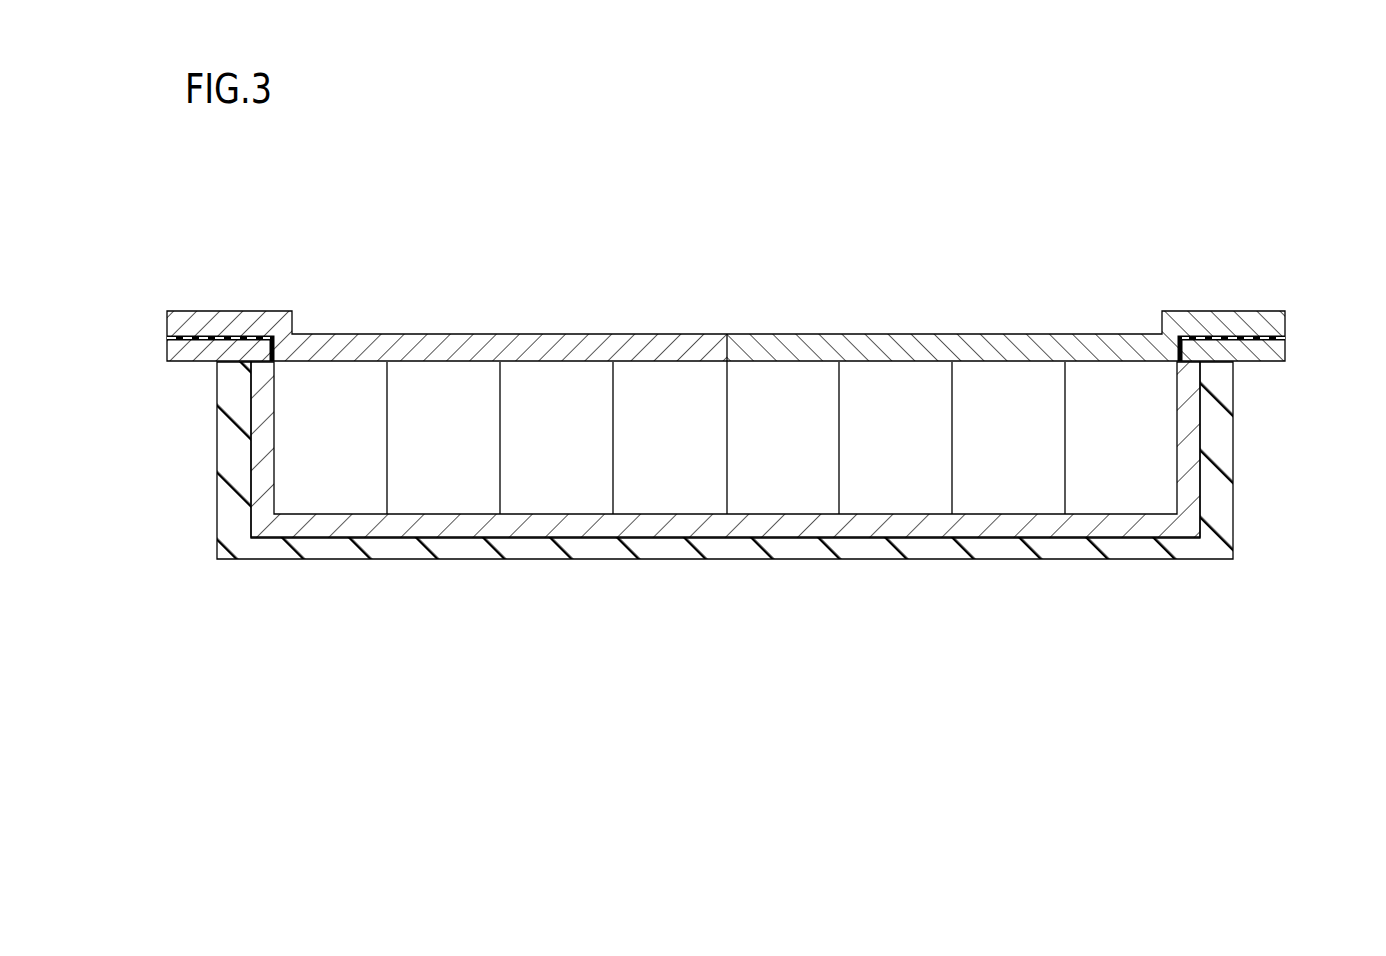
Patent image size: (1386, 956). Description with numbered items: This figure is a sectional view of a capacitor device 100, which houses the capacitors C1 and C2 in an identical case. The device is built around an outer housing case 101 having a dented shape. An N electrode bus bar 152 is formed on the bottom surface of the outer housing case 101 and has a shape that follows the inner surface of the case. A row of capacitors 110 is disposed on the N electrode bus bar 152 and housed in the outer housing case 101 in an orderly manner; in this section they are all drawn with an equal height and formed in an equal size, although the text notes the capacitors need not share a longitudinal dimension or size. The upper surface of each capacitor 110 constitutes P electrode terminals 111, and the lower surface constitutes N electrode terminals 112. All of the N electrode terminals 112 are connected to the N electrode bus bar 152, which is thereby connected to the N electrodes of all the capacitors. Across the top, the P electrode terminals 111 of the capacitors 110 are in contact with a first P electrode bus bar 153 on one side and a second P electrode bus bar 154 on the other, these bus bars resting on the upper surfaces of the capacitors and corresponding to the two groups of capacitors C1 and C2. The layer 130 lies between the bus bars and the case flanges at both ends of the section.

The capacitor device 100 is at (1206, 187).
The outer housing case 101 is at (1218, 443).
The capacitor 110 is at (305, 380).
The P electrode terminal 111 is at (361, 378).
The N electrode terminal 112 is at (331, 520).
The adhesive layer 130 is at (172, 337).
The N electrode bus bar 152 is at (1258, 355).
The first P electrode bus bar 153 is at (203, 318).
The second P electrode bus bar 154 is at (1238, 318).
The capacitor C1 is at (268, 217).
The capacitor C2 is at (1178, 217).